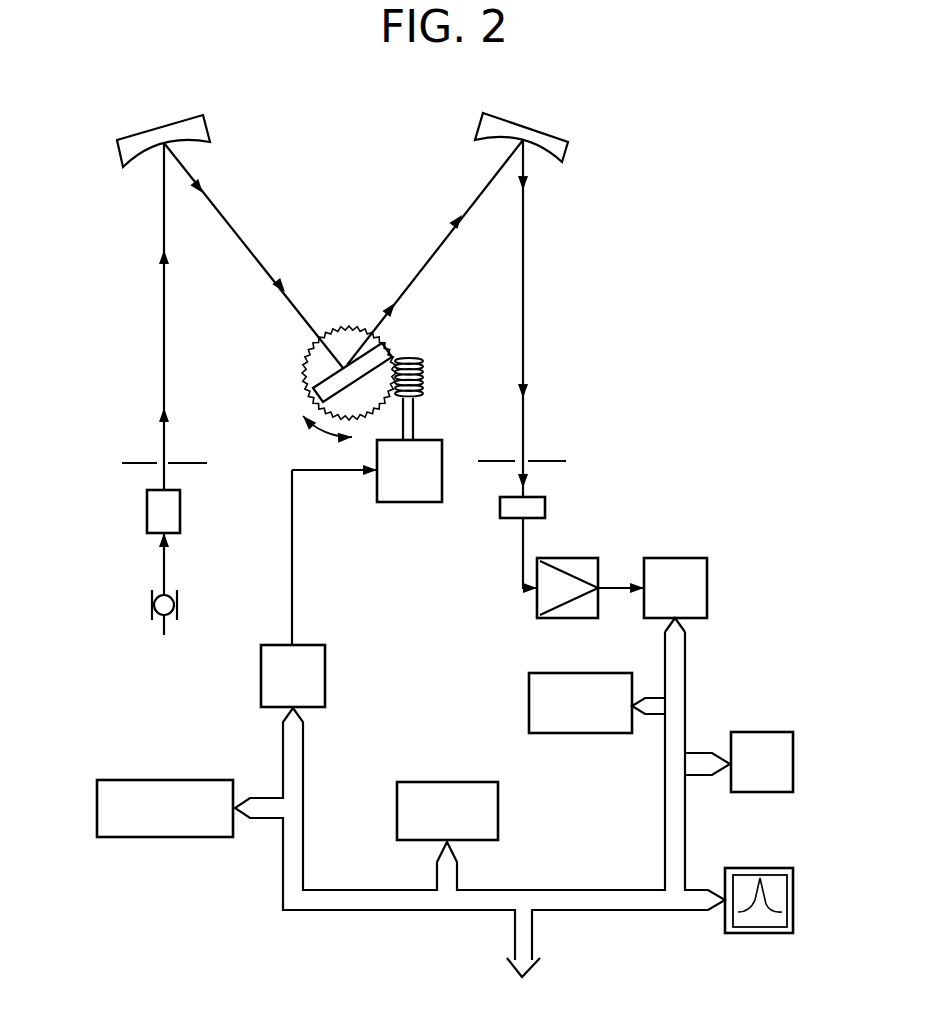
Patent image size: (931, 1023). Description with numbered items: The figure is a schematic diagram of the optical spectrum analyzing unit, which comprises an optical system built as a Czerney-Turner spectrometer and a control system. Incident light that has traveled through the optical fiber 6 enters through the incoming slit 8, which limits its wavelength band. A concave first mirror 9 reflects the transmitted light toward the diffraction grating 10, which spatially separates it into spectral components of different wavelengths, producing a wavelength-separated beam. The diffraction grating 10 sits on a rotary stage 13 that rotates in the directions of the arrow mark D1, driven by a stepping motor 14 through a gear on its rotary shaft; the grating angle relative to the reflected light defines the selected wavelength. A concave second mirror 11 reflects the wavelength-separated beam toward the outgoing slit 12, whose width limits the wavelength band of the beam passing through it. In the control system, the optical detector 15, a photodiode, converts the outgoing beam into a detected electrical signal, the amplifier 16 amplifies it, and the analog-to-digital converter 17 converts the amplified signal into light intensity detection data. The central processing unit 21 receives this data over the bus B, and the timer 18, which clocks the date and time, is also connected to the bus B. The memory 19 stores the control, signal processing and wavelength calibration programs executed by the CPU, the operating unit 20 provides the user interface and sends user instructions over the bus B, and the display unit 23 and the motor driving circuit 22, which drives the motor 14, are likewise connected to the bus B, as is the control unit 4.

The control unit 4 is at (520, 998).
The optical fiber 6 is at (162, 553).
The incoming slit 8 is at (135, 465).
The first mirror 9 is at (205, 138).
The diffraction grating 10 is at (313, 392).
The second mirror 11 is at (565, 152).
The outgoing slit 12 is at (542, 460).
The rotary stage 13 is at (310, 352).
The motor 14 is at (410, 502).
The optical detector 15 is at (545, 505).
The amplifier 16 is at (567, 558).
The analog-to-digital converter 17 is at (688, 558).
The timer 18 is at (616, 673).
The memory 19 is at (448, 782).
The operating unit 20 is at (200, 780).
The central processing unit 21 is at (768, 732).
The motor driving circuit 22 is at (275, 647).
The display unit 23 is at (762, 870).
The bus B is at (660, 830).
The rotation directions of rotary stage D1 is at (325, 437).